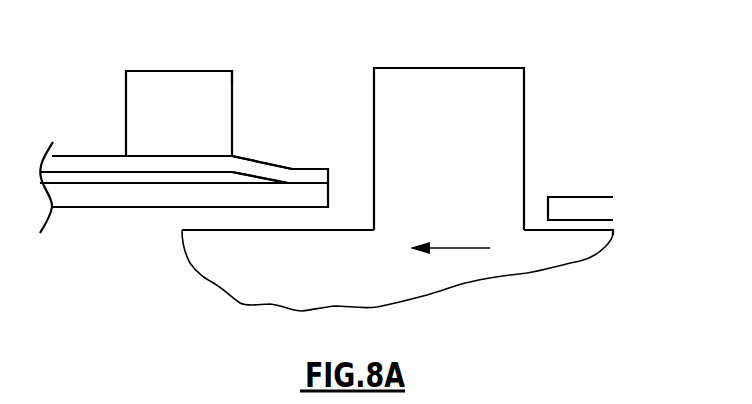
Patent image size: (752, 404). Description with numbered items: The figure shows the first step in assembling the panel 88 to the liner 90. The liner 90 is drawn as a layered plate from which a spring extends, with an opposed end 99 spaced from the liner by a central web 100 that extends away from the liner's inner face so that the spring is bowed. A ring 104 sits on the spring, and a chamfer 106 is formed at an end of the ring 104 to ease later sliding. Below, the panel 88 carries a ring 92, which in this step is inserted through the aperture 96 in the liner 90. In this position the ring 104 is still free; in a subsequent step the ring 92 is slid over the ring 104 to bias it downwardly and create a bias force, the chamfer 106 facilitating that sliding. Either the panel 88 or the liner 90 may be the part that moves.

The panel 88 is at (565, 251).
The liner 90 is at (75, 196).
The ring 92 is at (448, 96).
The aperture 96 is at (537, 212).
The opposed end 99 is at (258, 168).
The central web 100 is at (165, 163).
The ring 104 is at (178, 100).
The chamfer 106 is at (233, 71).